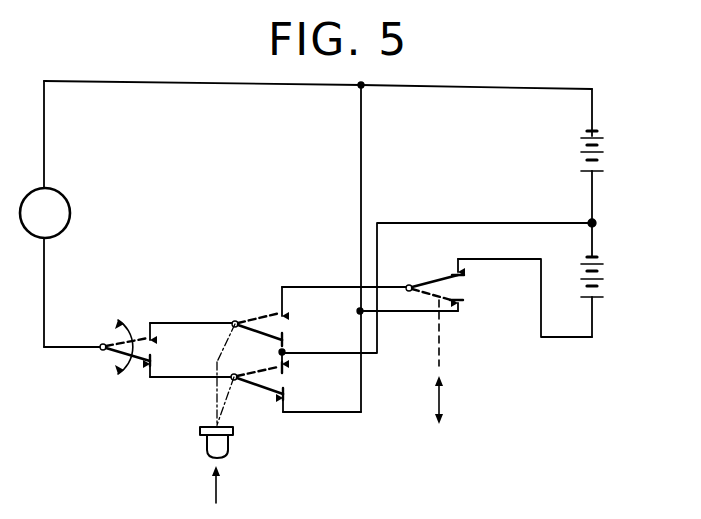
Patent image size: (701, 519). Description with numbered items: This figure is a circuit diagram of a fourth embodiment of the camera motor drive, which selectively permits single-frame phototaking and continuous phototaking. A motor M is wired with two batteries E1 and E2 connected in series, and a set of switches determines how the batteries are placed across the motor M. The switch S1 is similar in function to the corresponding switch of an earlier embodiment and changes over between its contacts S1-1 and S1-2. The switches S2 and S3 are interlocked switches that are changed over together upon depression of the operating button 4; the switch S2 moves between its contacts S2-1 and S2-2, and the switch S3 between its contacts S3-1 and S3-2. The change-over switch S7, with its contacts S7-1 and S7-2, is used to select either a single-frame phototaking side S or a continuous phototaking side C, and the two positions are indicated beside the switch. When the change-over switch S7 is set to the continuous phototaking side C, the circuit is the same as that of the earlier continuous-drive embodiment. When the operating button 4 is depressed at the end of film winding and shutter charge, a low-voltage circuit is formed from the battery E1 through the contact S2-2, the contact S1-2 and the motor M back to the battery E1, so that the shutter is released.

The motor M is at (45, 213).
The battery E1 is at (608, 151).
The battery E2 is at (608, 277).
The switch S1 is at (134, 370).
The contact of switch S1 S1-1 is at (155, 338).
The contact of switch S1 S1-2 is at (155, 363).
The interlocked switch S2 is at (272, 389).
The contact of switch S2 S2-1 is at (287, 396).
The contact of switch S2 S2-2 is at (287, 368).
The interlocked switch S3 is at (266, 317).
The contact of switch S3 S3-1 is at (287, 314).
The contact of switch S3 S3-2 is at (287, 341).
The change-over switch S7 is at (438, 283).
The contact of switch S7 S7-1 is at (464, 278).
The contact of switch S7 S7-2 is at (464, 307).
The continuous phototaking side C is at (450, 336).
The single-frame phototaking side S is at (448, 400).
The operating button 4 is at (207, 448).